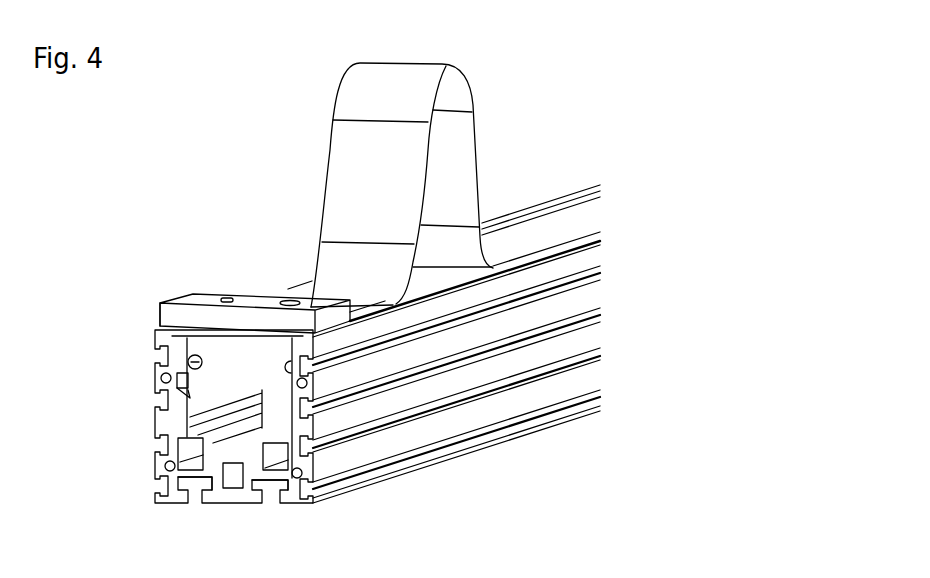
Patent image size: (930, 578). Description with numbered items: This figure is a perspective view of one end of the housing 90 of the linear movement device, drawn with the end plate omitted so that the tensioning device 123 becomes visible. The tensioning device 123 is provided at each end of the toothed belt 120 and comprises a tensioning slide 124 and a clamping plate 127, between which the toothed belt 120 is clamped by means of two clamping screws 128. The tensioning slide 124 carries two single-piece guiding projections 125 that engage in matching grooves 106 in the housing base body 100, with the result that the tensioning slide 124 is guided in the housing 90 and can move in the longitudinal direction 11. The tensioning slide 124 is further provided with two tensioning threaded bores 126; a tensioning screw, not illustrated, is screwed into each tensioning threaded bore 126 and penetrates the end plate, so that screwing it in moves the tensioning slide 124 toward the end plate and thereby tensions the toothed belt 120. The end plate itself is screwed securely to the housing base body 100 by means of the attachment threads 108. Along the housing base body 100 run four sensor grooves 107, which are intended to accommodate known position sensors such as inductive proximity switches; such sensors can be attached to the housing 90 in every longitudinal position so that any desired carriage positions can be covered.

The housing 90 is at (675, 128).
The housing base body 100 is at (490, 407).
The sensor grooves 107 is at (410, 453).
The attachment threads 108 is at (305, 463).
The toothed belt 120 is at (360, 177).
The clamping screws 128 is at (222, 300).
The clamping plate 127 is at (175, 310).
The grooves 106 is at (183, 368).
The tensioning threaded bores 126 is at (197, 360).
The guiding projections 125 is at (243, 388).
The tensioning slide 124 is at (242, 373).
The tensioning device 123 is at (124, 395).
The longitudinal direction 11 is at (114, 528).